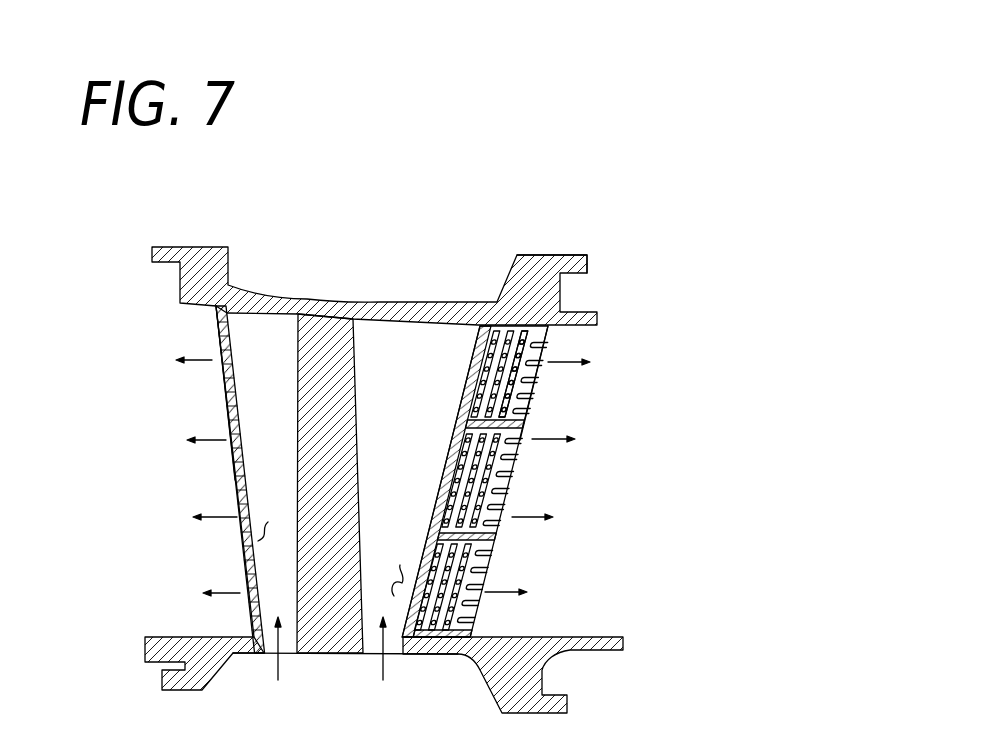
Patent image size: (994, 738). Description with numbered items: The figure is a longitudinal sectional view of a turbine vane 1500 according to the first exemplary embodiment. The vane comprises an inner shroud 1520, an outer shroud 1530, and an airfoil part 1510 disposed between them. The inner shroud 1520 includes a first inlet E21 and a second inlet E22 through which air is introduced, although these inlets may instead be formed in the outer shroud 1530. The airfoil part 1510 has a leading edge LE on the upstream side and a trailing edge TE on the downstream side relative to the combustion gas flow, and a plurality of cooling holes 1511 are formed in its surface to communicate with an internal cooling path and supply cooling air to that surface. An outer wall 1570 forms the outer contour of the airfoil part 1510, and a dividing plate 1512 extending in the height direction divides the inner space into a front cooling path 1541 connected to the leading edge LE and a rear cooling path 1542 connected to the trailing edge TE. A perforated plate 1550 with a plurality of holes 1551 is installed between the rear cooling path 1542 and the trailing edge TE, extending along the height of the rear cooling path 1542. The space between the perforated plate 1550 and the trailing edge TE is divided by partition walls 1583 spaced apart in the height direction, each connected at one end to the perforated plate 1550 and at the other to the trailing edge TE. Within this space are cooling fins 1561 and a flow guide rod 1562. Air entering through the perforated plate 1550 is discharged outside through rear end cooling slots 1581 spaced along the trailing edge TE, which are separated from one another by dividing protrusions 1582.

The turbine vane 1500 is at (378, 210).
The airfoil part 1510 is at (224, 467).
The cooling holes 1511 is at (227, 395).
The dividing plate 1512 is at (298, 348).
The inner shroud 1520 is at (612, 637).
The outer shroud 1530 is at (543, 291).
The front cooling path 1541 is at (250, 532).
The rear cooling path 1542 is at (402, 583).
The perforated plate 1550 is at (508, 413).
The holes 1551 is at (478, 333).
The cooling fins 1561 is at (587, 256).
The flow guide rod 1562 is at (529, 336).
The outer wall 1570 is at (240, 505).
The rear end cooling slots 1581 is at (512, 480).
The dividing protrusions 1582 is at (527, 410).
The partition wall 1583 is at (477, 539).
The leading edge LE is at (221, 327).
The trailing edge TE is at (550, 337).
The first inlet E21 is at (287, 655).
The second inlet E22 is at (373, 655).